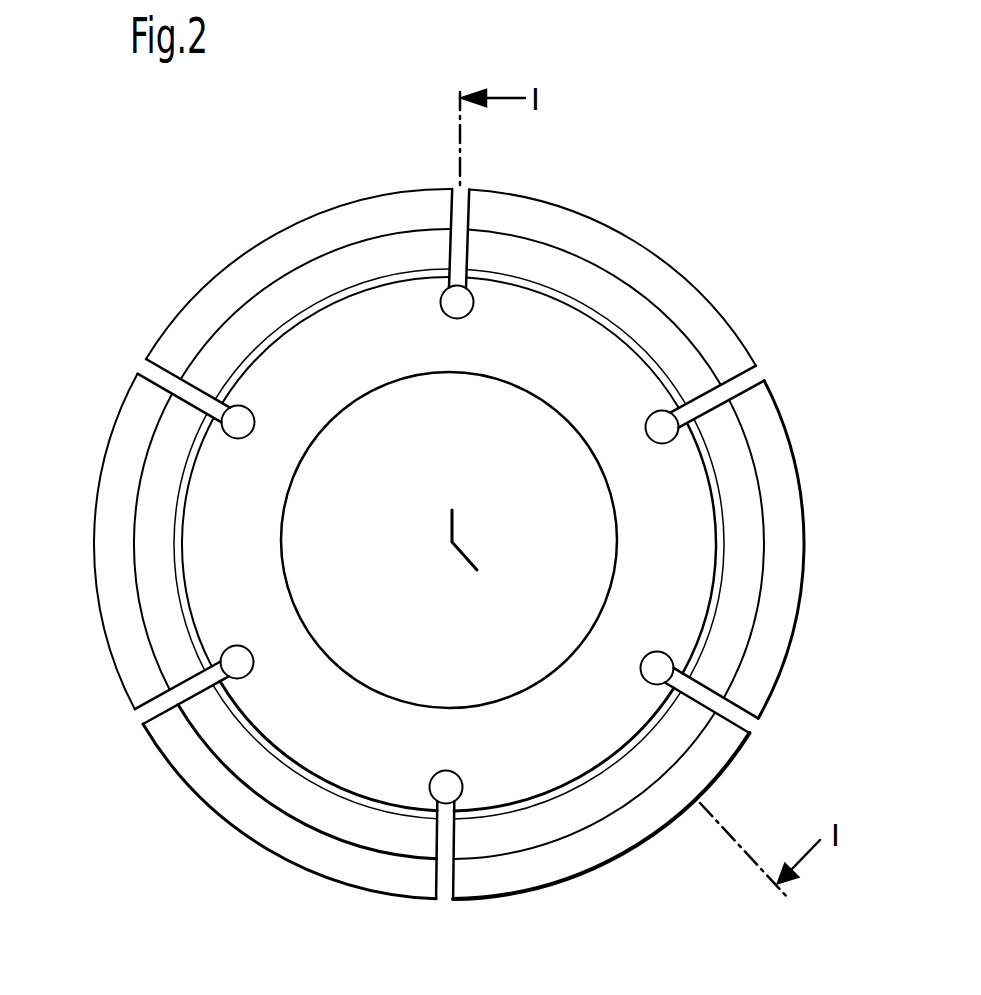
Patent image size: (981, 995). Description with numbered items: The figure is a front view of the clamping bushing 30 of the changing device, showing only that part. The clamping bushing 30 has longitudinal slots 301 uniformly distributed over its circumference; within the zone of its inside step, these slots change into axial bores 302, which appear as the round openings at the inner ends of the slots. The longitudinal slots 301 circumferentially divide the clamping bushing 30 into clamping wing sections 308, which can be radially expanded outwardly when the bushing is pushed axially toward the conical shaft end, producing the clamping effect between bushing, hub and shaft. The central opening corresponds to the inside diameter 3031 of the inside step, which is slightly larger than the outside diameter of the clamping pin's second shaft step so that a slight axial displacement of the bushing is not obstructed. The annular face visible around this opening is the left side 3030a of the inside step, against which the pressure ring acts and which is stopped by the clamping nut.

The clamping bushing 30 is at (193, 271).
The longitudinal slots 301 is at (442, 856).
The axial bores 302 is at (467, 298).
The clamping wing sections 308 is at (787, 498).
The inside diameter 3031 is at (283, 578).
The left side of inside step 3030a is at (495, 758).